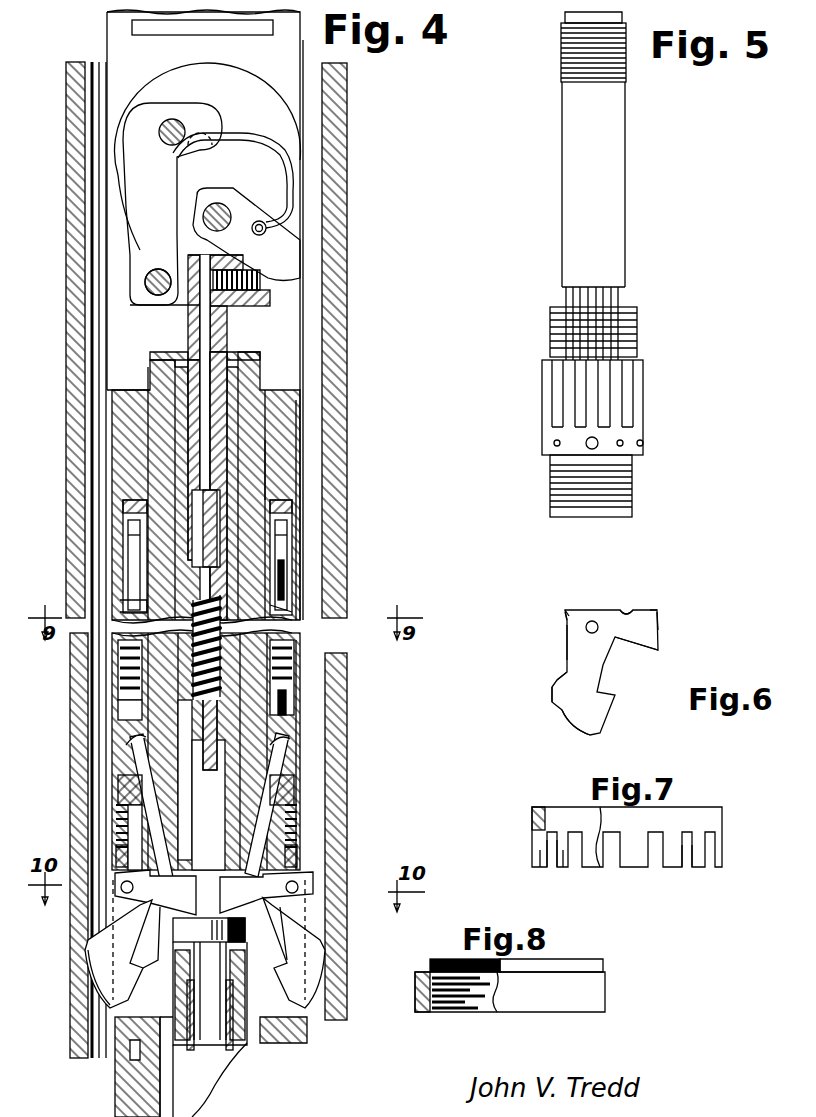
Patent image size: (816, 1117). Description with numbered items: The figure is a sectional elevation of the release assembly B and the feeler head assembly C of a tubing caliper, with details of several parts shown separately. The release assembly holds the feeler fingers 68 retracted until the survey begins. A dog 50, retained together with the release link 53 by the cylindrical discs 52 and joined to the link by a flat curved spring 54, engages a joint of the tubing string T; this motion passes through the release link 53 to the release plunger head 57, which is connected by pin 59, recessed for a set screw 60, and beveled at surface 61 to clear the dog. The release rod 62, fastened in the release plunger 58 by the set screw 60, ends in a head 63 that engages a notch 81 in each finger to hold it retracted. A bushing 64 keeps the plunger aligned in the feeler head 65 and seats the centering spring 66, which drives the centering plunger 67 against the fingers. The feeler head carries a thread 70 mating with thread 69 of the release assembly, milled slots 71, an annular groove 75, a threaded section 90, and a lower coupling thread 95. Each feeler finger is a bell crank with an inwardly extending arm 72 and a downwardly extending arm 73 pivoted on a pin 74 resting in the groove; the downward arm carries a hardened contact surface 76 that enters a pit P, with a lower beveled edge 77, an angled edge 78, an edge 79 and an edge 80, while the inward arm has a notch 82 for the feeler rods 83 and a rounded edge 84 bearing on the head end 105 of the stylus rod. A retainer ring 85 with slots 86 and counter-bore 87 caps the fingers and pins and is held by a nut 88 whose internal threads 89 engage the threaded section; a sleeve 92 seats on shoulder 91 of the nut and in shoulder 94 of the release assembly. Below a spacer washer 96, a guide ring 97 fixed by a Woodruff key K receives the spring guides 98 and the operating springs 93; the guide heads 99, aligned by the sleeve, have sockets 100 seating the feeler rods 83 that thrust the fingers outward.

In FIG. 4, the tubing string T is at (67, 205).
In FIG. 4, the release assembly B is at (105, 390).
In FIG. 4, the Woodruff key K is at (128, 545).
In FIG. 4, the feeler head assembly C is at (110, 583).
In FIG. 4, the pit P is at (90, 972).
In FIG. 4, the dog 50 is at (283, 255).
In FIG. 4, the cylindrical discs 52 is at (232, 96).
In FIG. 4, the release link 53 is at (140, 243).
In FIG. 4, the flat curved spring 54 is at (265, 133).
In FIG. 4, the release plunger head 57 is at (273, 302).
In FIG. 4, the release plunger 58 is at (227, 328).
In FIG. 4, the pin 59 is at (150, 282).
In FIG. 4, the set screw 60 is at (253, 282).
In FIG. 4, the beveled surface 61 is at (270, 297).
In FIG. 4, the release rod 62 is at (205, 348).
In FIG. 4, the head 63 is at (202, 790).
In FIG. 4, the bushing 64 is at (300, 390).
In FIG. 4, the feeler head 65 is at (270, 433).
In FIG. 5, the feeler head 65 is at (628, 165).
In FIG. 4, the centering spring 66 is at (140, 665).
In FIG. 4, the centering plunger 67 is at (140, 700).
In FIG. 4, the feeler fingers 68 is at (125, 952).
In FIG. 6, the feeler fingers 68 is at (660, 637).
In FIG. 4, the thread 69 is at (263, 457).
In FIG. 5, the thread 70 is at (562, 68).
In FIG. 5, the milled slots 71 is at (625, 383).
In FIG. 6, the inwardly extending arm 72 is at (655, 610).
In FIG. 6, the downwardly extending arm 73 is at (597, 660).
In FIG. 6, the pivoting pin 74 is at (566, 610).
In FIG. 5, the annular groove 75 is at (548, 355).
In FIG. 6, the contact surface 76 is at (552, 697).
In FIG. 6, the lower beveled edge 77 is at (568, 722).
In FIG. 6, the angled edge 78 is at (560, 676).
In FIG. 6, the edge 79 is at (567, 645).
In FIG. 6, the edge 80 is at (565, 614).
In FIG. 6, the notch 81 is at (658, 615).
In FIG. 4, the notch 82 is at (267, 873).
In FIG. 6, the notch 82 is at (626, 610).
In FIG. 4, the feeler rods 83 is at (283, 757).
In FIG. 6, the rounded edge 84 is at (658, 648).
In FIG. 4, the retainer ring 85 is at (302, 848).
In FIG. 7, the retainer ring 85 is at (722, 818).
In FIG. 7, the slots 86 is at (693, 867).
In FIG. 7, the counter-bore 87 is at (558, 867).
In FIG. 4, the nut 88 is at (302, 820).
In FIG. 8, the nut 88 is at (607, 985).
In FIG. 8, the internal threads 89 is at (455, 1003).
In FIG. 4, the threaded section 90 is at (120, 826).
In FIG. 5, the threaded section 90 is at (637, 320).
In FIG. 4, the shoulder 91 is at (302, 790).
In FIG. 8, the shoulder 91 is at (604, 965).
In FIG. 4, the sleeve 92 is at (302, 550).
In FIG. 4, the feeler finger operating springs 93 is at (175, 673).
In FIG. 4, the shoulder 94 is at (302, 437).
In FIG. 5, the thread 95 is at (633, 492).
In FIG. 4, the spacer washer 96 is at (302, 507).
In FIG. 4, the guide ring 97 is at (302, 577).
In FIG. 4, the spring guides 98 is at (293, 595).
In FIG. 4, the heads 99 is at (300, 702).
In FIG. 4, the sockets 100 is at (302, 733).
In FIG. 4, the head end 105 is at (245, 925).